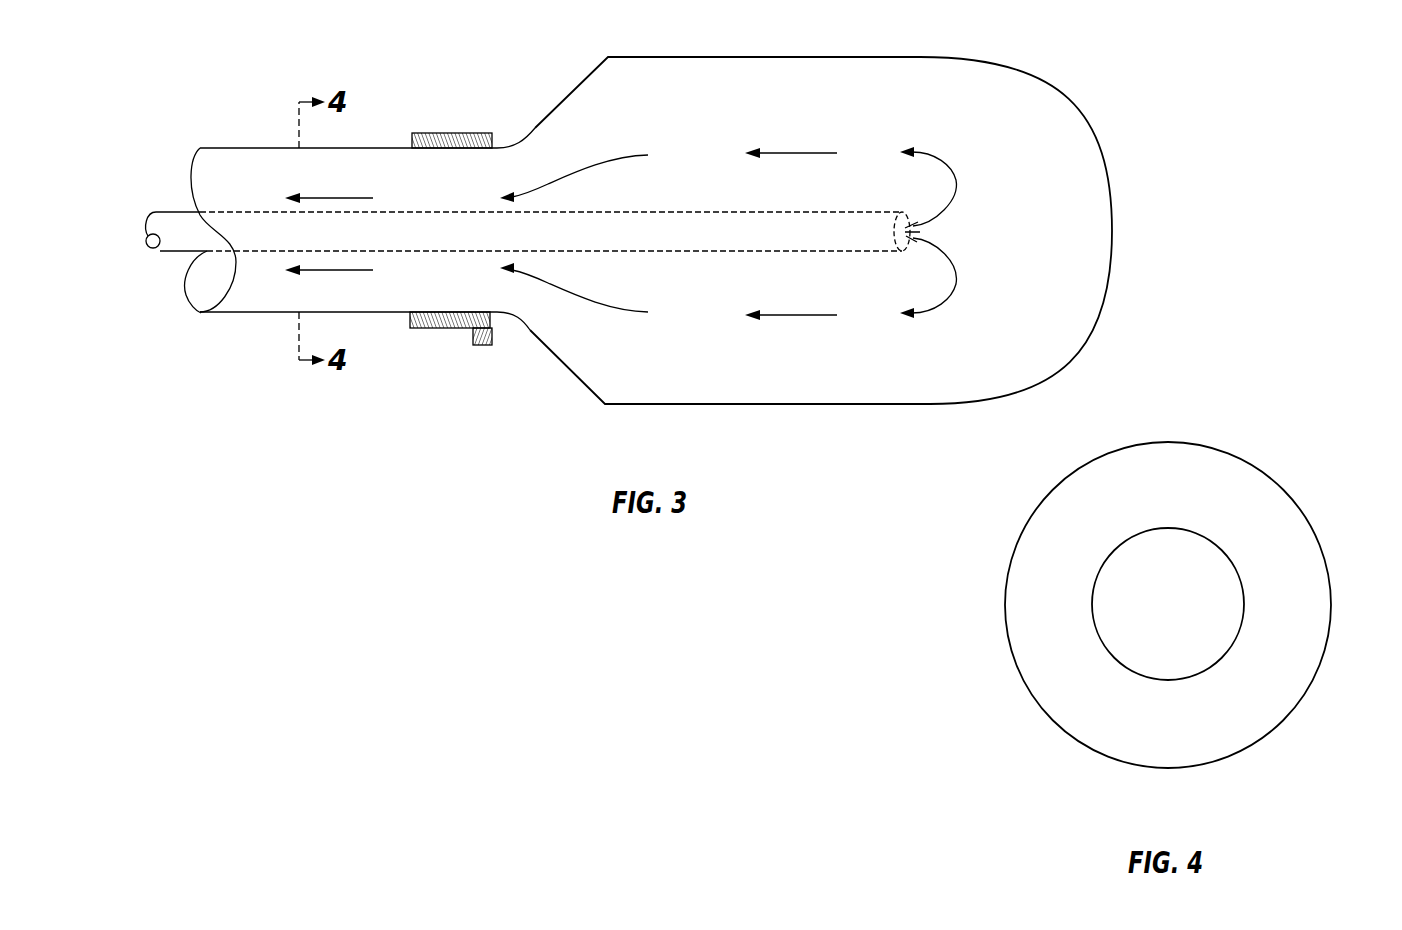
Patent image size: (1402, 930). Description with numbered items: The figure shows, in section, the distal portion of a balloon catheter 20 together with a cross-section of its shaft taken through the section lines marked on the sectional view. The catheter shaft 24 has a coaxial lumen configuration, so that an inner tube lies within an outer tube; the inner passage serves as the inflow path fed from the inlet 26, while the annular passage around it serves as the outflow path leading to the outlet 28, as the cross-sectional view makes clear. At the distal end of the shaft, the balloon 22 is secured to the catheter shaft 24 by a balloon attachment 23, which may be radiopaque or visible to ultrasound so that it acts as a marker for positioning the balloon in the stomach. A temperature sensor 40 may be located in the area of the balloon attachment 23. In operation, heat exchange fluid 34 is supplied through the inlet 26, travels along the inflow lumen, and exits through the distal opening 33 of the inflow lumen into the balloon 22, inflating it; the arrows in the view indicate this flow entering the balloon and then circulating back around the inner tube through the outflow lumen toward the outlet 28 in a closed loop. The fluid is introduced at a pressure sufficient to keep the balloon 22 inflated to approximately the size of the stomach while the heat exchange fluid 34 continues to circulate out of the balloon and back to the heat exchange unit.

In FIG. 3, the balloon catheter 20 is at (177, 183).
In FIG. 4, the balloon catheter 20 is at (1271, 470).
In FIG. 3, the balloon 22 is at (915, 56).
In FIG. 3, the balloon attachment 23 is at (450, 133).
In FIG. 3, the catheter shaft 24 is at (357, 148).
In FIG. 4, the catheter shaft 24 is at (1323, 547).
In FIG. 3, the inlet 26 is at (153, 252).
In FIG. 4, the inlet 26 is at (1181, 617).
In FIG. 3, the outlet 28 is at (207, 288).
In FIG. 4, the outlet 28 is at (1181, 735).
In FIG. 3, the distal opening 33 is at (915, 228).
In FIG. 3, the heat exchange fluid 34 is at (945, 303).
In FIG. 3, the temperature sensor 40 is at (483, 346).